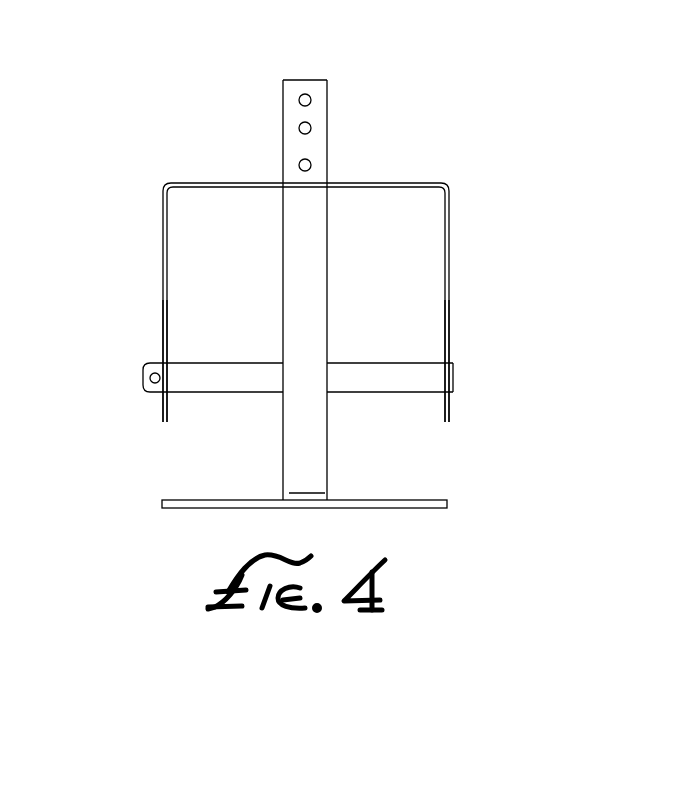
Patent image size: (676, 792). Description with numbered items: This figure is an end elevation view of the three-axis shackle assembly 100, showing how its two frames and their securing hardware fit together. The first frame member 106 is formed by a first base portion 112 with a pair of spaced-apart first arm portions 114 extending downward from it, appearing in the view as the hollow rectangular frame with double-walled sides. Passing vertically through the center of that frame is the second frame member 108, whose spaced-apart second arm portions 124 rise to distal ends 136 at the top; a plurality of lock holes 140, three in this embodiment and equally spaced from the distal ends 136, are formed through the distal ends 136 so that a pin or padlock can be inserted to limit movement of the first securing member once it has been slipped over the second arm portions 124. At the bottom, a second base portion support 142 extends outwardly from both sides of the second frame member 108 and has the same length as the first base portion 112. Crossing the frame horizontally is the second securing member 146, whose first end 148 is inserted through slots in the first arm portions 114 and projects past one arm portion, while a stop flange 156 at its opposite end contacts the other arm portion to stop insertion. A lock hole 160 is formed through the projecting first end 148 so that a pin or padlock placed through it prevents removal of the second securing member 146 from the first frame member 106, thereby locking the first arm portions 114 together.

The three-axis shackle assembly 100 is at (443, 112).
The first frame member 106 is at (450, 258).
The second frame member 108 is at (330, 233).
The first base portion 112 is at (195, 183).
The first arm portions 114 is at (163, 262).
The second arm portions 124 is at (299, 458).
The distal ends 136 is at (297, 80).
The lock hole 140 is at (299, 128).
The second base portion support 142 is at (420, 510).
The second securing member 146 is at (230, 393).
The first end 148 is at (152, 393).
The stop flange 156 is at (453, 378).
The lock hole 160 is at (150, 382).